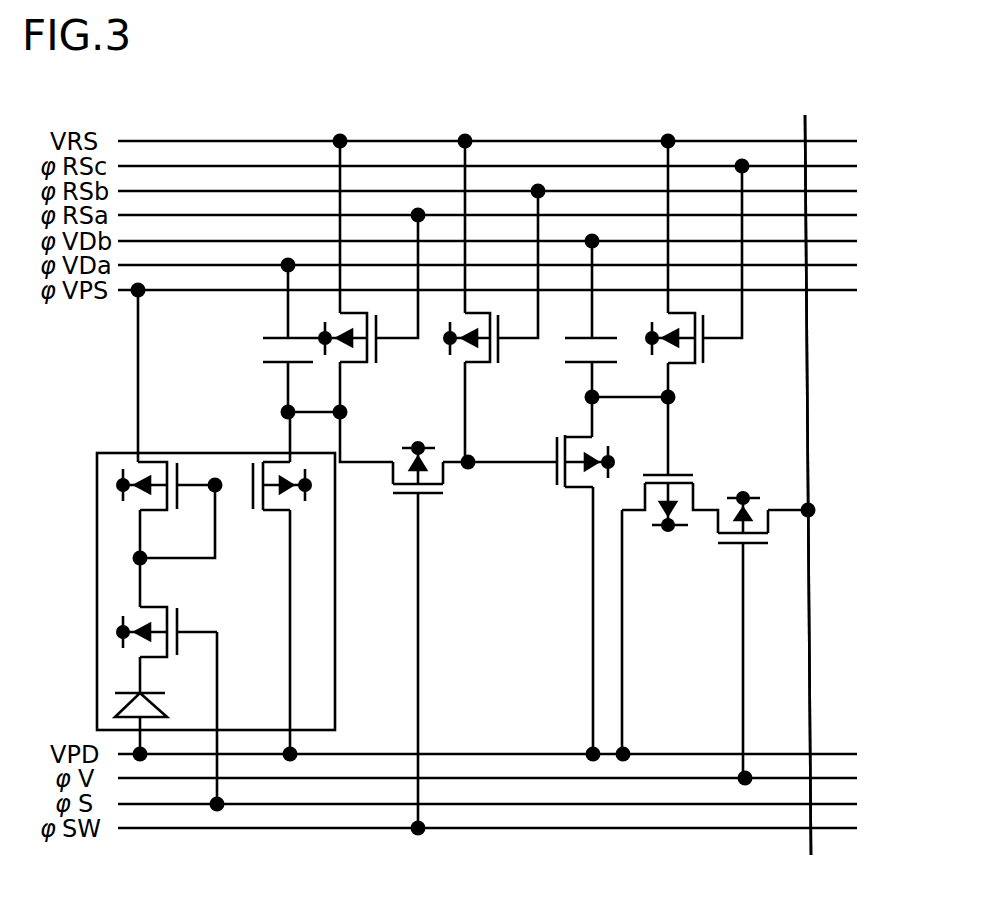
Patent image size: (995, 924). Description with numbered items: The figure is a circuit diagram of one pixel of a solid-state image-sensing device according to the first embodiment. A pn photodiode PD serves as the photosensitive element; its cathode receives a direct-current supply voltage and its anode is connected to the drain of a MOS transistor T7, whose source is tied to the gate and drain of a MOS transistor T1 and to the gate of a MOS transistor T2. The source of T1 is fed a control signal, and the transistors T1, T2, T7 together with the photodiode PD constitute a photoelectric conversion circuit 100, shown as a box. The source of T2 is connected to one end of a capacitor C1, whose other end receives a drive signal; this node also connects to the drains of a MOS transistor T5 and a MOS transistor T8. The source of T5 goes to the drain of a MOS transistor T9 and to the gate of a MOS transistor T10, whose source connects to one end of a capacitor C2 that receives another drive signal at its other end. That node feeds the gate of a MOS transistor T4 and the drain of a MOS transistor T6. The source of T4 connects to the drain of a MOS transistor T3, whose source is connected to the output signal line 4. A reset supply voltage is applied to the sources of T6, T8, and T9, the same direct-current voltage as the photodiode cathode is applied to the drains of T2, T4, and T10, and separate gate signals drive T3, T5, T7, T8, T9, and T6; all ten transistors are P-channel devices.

The MOS transistor T1 is at (165, 500).
The MOS transistor T2 is at (281, 506).
The MOS transistor T3 is at (743, 501).
The MOS transistor T4 is at (670, 519).
The MOS transistor T5 is at (404, 457).
The MOS transistor T6 is at (693, 285).
The MOS transistor T7 is at (168, 623).
The MOS transistor T8 is at (365, 295).
The MOS transistor T9 is at (490, 283).
The MOS transistor T10 is at (558, 469).
The capacitor C1 is at (269, 346).
The capacitor C2 is at (602, 335).
The pn photodiode PD is at (158, 694).
The photoelectric conversion circuit 100 is at (335, 590).
The output signal line 4 is at (811, 832).